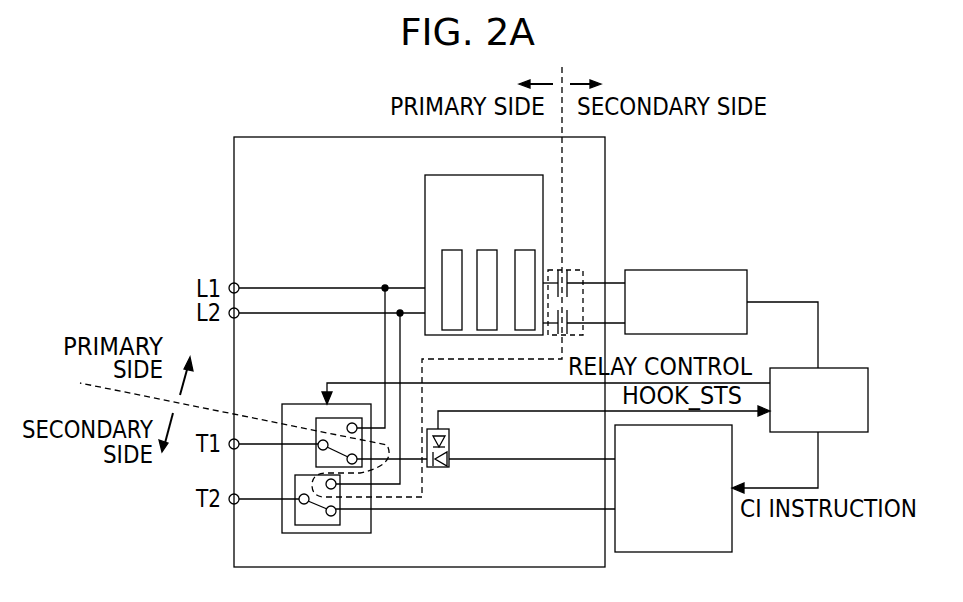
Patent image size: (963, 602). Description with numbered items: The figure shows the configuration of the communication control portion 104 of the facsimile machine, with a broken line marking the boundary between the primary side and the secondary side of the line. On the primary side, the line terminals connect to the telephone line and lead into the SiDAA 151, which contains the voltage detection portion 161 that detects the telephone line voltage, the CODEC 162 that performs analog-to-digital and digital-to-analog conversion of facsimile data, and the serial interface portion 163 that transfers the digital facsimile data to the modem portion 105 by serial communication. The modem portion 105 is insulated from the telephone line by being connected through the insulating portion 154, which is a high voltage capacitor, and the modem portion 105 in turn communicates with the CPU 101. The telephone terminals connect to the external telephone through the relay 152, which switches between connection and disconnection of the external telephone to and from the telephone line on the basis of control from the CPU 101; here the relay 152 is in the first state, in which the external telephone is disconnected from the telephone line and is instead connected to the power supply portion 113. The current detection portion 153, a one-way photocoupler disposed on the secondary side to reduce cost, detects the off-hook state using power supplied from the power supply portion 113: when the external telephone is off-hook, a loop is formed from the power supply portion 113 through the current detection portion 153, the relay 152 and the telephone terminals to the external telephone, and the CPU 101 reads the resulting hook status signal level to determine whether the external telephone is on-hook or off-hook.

The communication control portion 104 is at (290, 137).
The SiDAA 151 is at (485, 237).
The voltage detection portion 161 is at (452, 250).
The coder/decoder (CODEC) 162 is at (487, 250).
The serial interface portion 163 is at (523, 250).
The insulating portion 154 is at (572, 270).
The modem portion 105 is at (717, 270).
The CPU 101 is at (833, 368).
The power supply portion 113 is at (733, 451).
The relay 152 is at (305, 404).
The current detection portion 153 is at (450, 440).